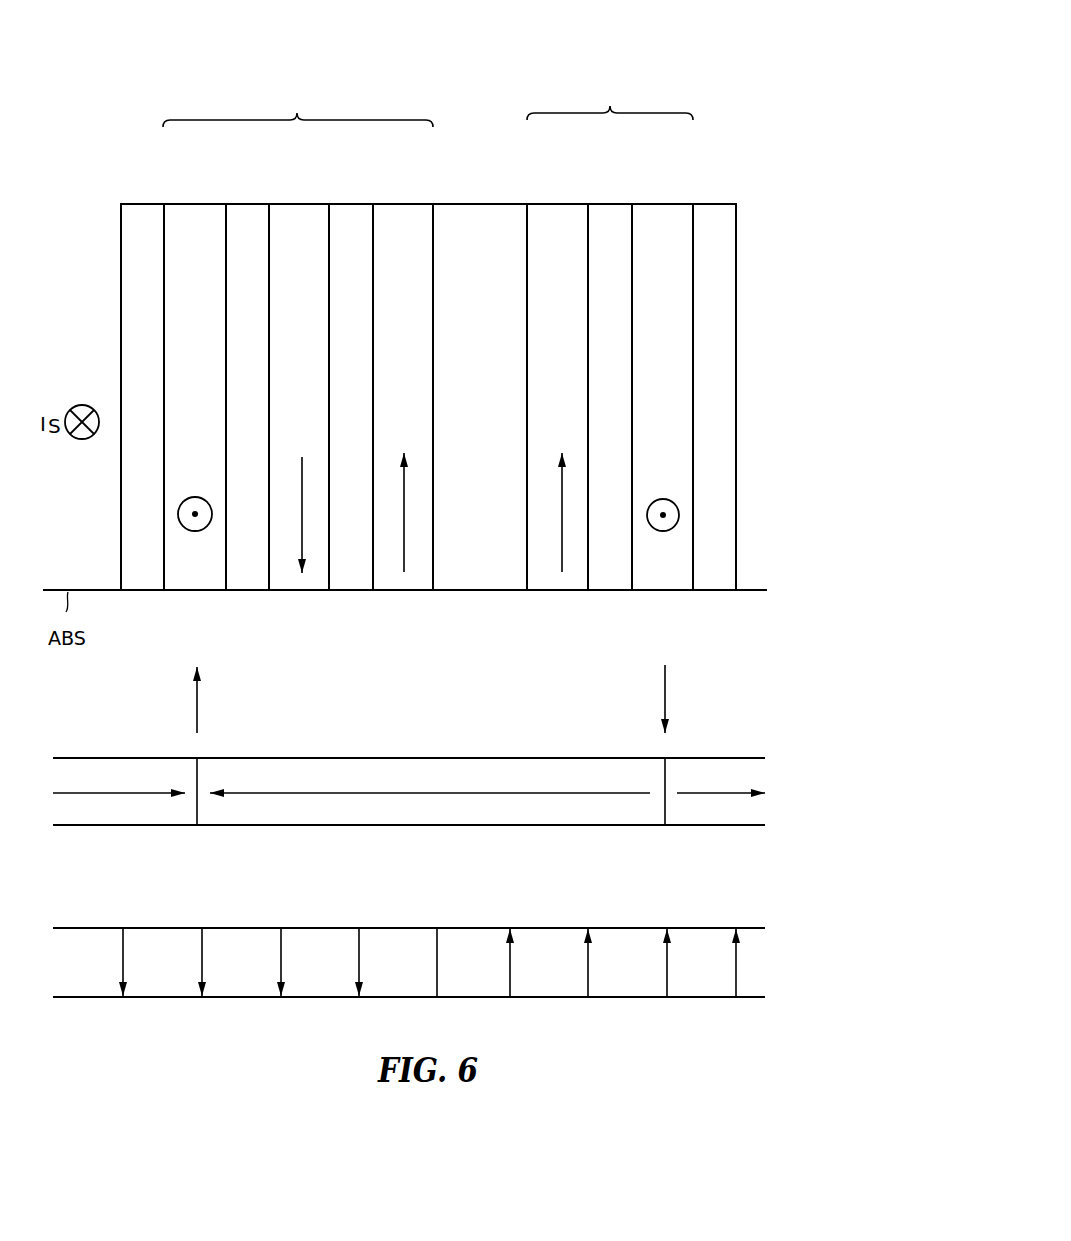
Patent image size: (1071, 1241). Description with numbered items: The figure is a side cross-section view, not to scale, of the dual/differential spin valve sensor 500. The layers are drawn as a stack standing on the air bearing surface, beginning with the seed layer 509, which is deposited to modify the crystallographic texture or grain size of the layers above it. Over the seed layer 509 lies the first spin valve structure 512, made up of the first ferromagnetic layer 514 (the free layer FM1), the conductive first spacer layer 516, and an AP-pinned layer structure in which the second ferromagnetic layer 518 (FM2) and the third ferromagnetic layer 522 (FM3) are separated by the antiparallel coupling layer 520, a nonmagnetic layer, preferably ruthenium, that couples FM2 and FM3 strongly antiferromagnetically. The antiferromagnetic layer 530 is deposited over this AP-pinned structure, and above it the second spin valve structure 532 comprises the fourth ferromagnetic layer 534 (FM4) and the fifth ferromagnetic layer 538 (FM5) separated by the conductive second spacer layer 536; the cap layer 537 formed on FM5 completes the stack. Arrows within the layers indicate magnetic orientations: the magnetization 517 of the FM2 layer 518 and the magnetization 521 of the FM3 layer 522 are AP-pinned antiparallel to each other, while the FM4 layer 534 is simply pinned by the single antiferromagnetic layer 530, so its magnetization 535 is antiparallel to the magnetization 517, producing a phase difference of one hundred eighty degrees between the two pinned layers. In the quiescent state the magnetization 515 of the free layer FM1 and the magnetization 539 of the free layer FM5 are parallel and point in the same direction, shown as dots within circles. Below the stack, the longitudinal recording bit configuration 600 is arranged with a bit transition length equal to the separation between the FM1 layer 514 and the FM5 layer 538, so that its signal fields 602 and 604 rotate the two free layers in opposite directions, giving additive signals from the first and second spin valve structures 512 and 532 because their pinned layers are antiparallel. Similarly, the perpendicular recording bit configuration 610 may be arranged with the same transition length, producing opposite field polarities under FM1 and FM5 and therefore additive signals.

The dual/differential spin valve sensor 500 is at (780, 97).
The seed layer 509 is at (141, 204).
The first spin valve structure 512 is at (298, 104).
The first ferromagnetic layer 514 is at (195, 204).
The magnetization of FM1 515 is at (194, 497).
The first spacer layer 516 is at (244, 204).
The magnetization of FM2 517 is at (302, 475).
The second ferromagnetic layer 518 is at (296, 204).
The antiparallel coupling layer 520 is at (349, 204).
The magnetization of FM3 521 is at (404, 484).
The third ferromagnetic layer 522 is at (400, 204).
The antiferromagnetic layer 530 is at (476, 204).
The second spin valve structure 532 is at (610, 97).
The fourth ferromagnetic layer 534 is at (556, 204).
The magnetization of FM4 535 is at (562, 484).
The second spacer layer 536 is at (611, 204).
The cap layer 537 is at (712, 204).
The fifth ferromagnetic layer 538 is at (664, 204).
The magnetization of FM5 539 is at (663, 499).
The bit configuration 600 is at (772, 845).
The signal field 602 is at (197, 707).
The signal field 604 is at (665, 688).
The bit configuration 610 is at (772, 1013).